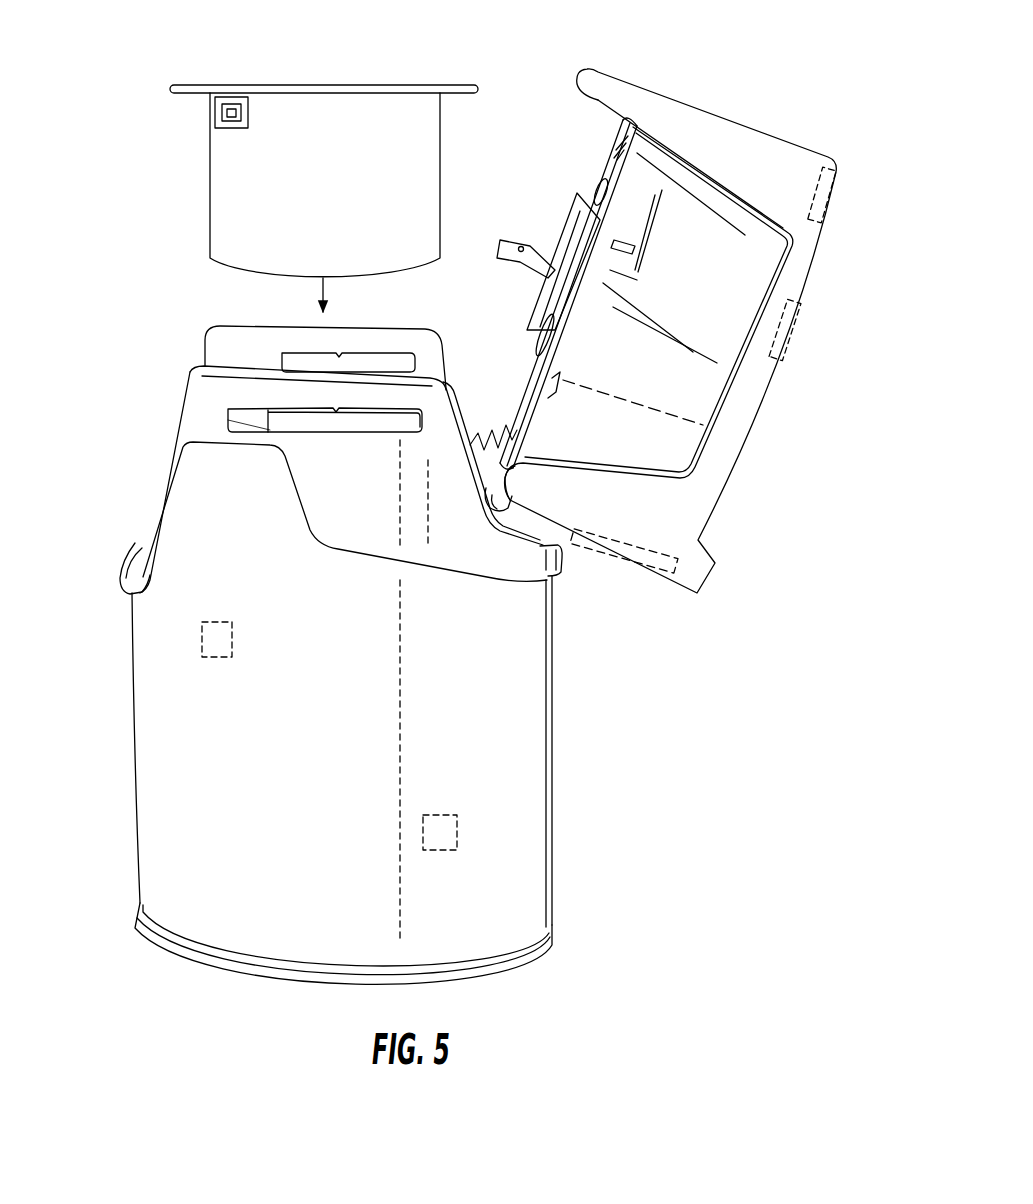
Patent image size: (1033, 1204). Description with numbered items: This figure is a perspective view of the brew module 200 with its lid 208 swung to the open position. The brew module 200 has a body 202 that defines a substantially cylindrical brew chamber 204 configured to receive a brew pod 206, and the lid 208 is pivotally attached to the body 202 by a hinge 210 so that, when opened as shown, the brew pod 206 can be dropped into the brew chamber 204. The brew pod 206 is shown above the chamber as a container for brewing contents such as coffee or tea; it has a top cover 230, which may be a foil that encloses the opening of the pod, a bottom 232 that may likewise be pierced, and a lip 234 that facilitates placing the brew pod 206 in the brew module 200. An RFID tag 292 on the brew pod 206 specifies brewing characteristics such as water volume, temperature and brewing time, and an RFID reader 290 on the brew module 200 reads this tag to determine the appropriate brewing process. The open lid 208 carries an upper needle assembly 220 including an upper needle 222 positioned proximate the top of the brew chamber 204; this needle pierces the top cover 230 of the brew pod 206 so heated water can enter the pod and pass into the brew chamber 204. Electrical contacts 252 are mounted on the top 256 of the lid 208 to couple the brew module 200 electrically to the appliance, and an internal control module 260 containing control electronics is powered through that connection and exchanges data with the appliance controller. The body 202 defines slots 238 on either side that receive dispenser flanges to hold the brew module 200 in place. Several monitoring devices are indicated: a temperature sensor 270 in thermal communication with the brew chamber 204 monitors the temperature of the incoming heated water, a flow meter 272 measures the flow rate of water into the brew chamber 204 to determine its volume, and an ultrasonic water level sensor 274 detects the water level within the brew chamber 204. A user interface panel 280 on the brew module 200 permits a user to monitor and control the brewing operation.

The brew module 200 is at (87, 90).
The body 202 is at (527, 712).
The brew chamber 204 is at (183, 759).
The brew pod 206 is at (342, 195).
The lid 208 is at (768, 371).
The hinge 210 is at (533, 549).
The upper needle assembly 220 is at (547, 212).
The upper needle 222 is at (513, 238).
The top cover 230 is at (293, 85).
The bottom 232 is at (226, 266).
The lip 234 is at (461, 86).
The slots 238 is at (294, 424).
The electrical contacts 252 is at (820, 178).
The top of lid 256 is at (757, 448).
The internal control module 260 is at (716, 567).
The temperature sensor 270 is at (438, 813).
The flow meter 272 is at (580, 272).
The ultrasonic water level sensor 274 is at (233, 641).
The user interface panel 280 is at (658, 594).
The RFID reader 290 is at (790, 326).
The RFID tag 292 is at (215, 105).